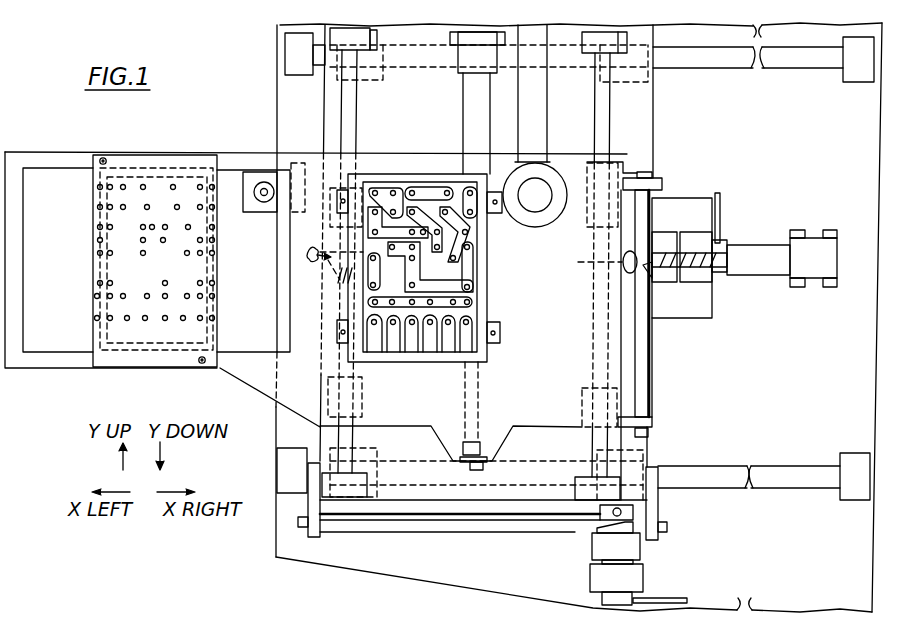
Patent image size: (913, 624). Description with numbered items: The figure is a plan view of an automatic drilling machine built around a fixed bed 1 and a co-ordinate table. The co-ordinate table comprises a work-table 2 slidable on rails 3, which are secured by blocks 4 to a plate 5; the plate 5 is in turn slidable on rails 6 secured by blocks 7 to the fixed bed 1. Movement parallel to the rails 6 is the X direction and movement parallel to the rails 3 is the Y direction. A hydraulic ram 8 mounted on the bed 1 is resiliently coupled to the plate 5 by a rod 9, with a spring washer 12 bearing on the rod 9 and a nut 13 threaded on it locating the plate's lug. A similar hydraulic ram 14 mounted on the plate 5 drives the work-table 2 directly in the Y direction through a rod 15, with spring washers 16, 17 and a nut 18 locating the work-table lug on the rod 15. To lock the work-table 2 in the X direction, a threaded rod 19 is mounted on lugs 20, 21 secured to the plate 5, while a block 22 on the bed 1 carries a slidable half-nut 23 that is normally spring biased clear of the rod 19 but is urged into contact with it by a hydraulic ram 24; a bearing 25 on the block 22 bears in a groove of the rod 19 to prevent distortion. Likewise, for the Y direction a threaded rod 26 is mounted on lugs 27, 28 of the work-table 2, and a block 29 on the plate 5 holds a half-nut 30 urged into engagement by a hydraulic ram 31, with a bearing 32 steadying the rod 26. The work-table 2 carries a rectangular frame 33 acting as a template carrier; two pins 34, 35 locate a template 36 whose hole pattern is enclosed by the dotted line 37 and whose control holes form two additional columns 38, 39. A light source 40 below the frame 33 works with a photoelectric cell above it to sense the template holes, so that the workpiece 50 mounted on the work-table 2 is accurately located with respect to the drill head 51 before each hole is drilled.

The fixed bed 1 is at (840, 158).
The work-table 2 is at (535, 258).
The rails 3 is at (348, 108).
The blocks 4 is at (360, 35).
The plate 5 is at (652, 125).
The rails 6 is at (733, 58).
The blocks 7 is at (302, 68).
The hydraulic ram 8 is at (754, 267).
The rod 9 is at (327, 235).
The spring washer 12 is at (337, 290).
The nut 13 is at (323, 251).
The hydraulic ram 14 is at (483, 118).
The rod 15 is at (473, 380).
The spring washer 16 is at (479, 444).
The spring washer 17 is at (480, 463).
The nut 18 is at (462, 465).
The threaded rod 19 is at (425, 520).
The lug 20 is at (308, 508).
The lug 21 is at (658, 503).
The block 22 is at (640, 553).
The half-nut 23 is at (597, 527).
The hydraulic ram 24 is at (628, 578).
The bearing 25 is at (600, 508).
The threaded rod 26 is at (640, 362).
The lug 27 is at (652, 422).
The lug 28 is at (648, 177).
The block 29 is at (678, 245).
The half-nut 30 is at (648, 275).
The hydraulic ram 31 is at (719, 252).
The bearing 32 is at (587, 263).
The rectangular frame 33 is at (34, 358).
The pin 34 is at (103, 158).
The pin 35 is at (203, 365).
The template 36 is at (151, 262).
The dotted line 37 is at (208, 344).
The column of control holes 38 is at (210, 297).
The column of control holes 39 is at (97, 318).
The light source 40 is at (261, 204).
The workpiece 50 is at (457, 312).
The drill head 51 is at (540, 203).